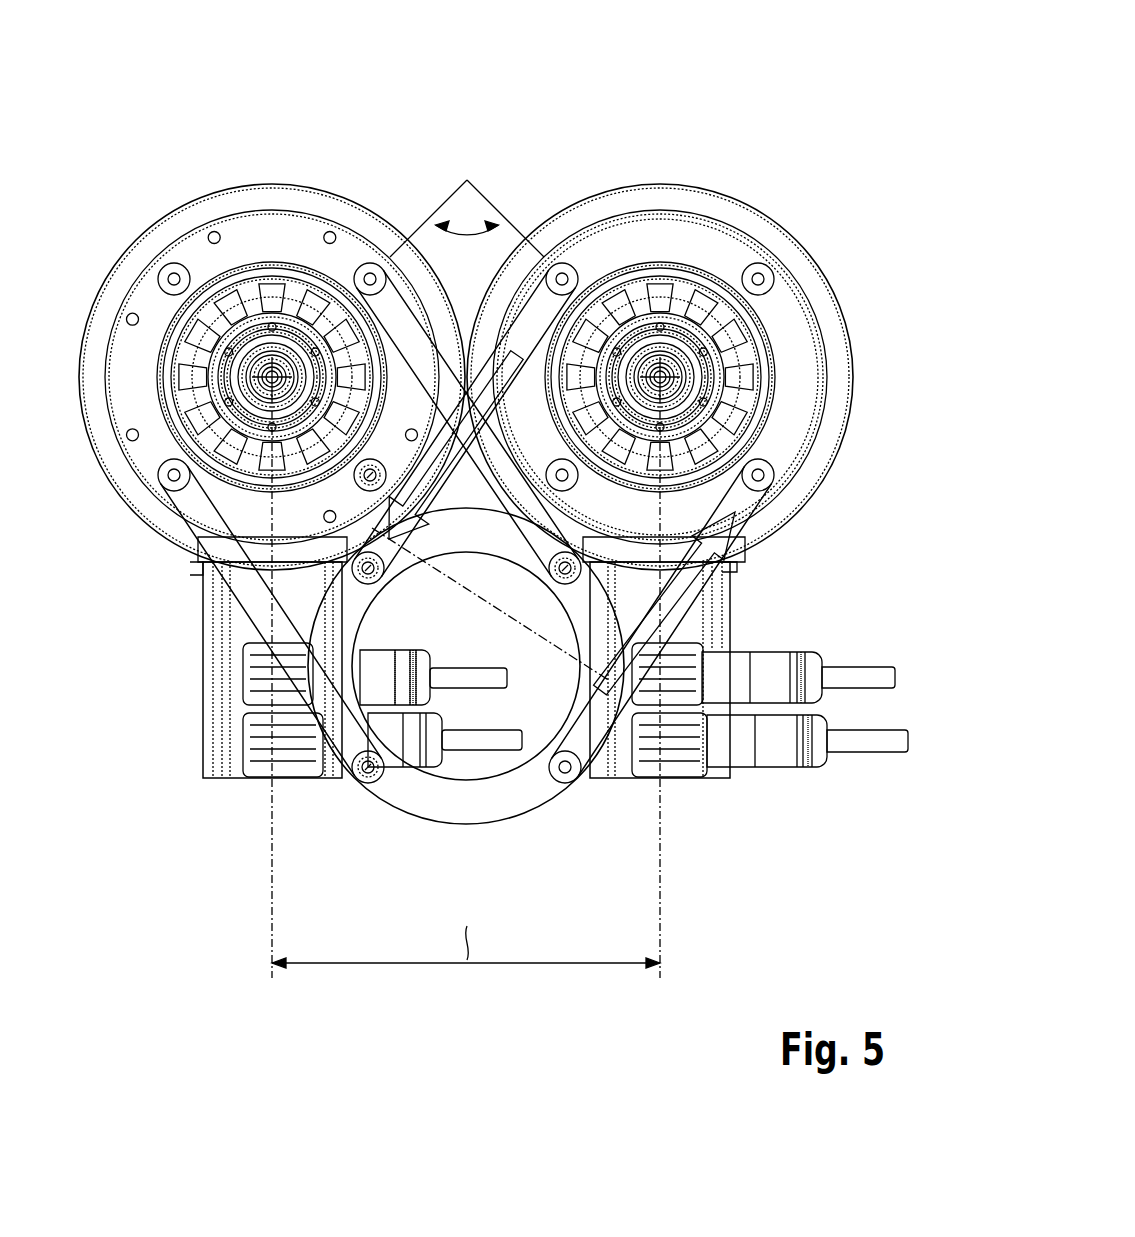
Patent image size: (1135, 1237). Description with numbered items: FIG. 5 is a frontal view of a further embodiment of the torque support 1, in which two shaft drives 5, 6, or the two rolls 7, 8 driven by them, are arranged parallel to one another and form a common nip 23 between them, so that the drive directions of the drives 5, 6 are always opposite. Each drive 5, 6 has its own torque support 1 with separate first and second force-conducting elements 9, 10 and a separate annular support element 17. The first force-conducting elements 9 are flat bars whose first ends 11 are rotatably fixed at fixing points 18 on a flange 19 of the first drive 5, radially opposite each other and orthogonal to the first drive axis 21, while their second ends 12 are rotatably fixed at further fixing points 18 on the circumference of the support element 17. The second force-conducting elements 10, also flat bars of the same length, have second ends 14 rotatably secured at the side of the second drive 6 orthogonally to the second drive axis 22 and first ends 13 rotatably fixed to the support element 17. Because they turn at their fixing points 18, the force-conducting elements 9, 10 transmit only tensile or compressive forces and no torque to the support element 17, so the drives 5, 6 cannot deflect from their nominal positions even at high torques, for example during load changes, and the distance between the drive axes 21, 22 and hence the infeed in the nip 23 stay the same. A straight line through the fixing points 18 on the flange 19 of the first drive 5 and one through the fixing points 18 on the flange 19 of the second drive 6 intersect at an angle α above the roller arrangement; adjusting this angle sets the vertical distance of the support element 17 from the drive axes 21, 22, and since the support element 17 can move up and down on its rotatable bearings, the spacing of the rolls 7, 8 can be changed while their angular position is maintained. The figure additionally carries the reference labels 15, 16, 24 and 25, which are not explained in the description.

The torque support 1 is at (242, 70).
The shaft drive 5 is at (743, 113).
The shaft drive 6 is at (305, 125).
The roll 7 is at (773, 220).
The roll 8 is at (130, 241).
The first force-conducting element 9 is at (534, 282).
The second force-conducting element 10 is at (430, 330).
The first end 11 is at (570, 268).
The second end 12 is at (380, 578).
The first end 13 is at (557, 578).
The second end 14 is at (368, 262).
The second output shaft 15 is at (666, 370).
The first output shaft 16 is at (265, 370).
The support element 17 is at (461, 826).
The fixing point 18 is at (492, 488).
The flange 19 is at (263, 235).
The first drive axis 21 is at (737, 370).
The second drive axis 22 is at (247, 318).
The nip 23 is at (470, 322).
The connection cable 24 is at (707, 583).
The pivot direction arrow 25 is at (440, 460).